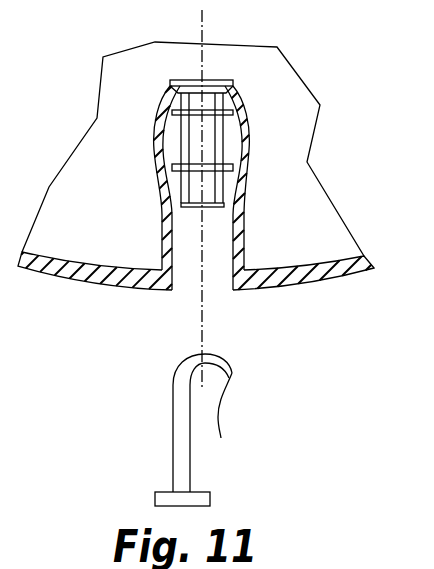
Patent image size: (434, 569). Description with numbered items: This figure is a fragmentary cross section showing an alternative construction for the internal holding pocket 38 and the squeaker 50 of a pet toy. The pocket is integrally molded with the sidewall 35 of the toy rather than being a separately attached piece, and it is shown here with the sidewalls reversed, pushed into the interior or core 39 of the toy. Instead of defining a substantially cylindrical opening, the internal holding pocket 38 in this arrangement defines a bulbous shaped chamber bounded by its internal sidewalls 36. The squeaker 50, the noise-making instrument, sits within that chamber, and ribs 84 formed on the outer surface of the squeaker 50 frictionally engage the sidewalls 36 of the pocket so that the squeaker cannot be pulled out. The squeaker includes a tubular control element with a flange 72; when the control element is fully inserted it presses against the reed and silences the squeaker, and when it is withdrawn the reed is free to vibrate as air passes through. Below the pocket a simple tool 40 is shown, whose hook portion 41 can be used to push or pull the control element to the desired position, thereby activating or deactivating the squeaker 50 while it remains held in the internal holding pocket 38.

The sidewall 35 is at (90, 282).
The internal sidewalls 36 is at (155, 143).
The internal holding pocket 38 is at (185, 296).
The core 39 is at (103, 233).
The tool 40 is at (173, 455).
The hook portion 41 is at (221, 438).
The squeaker 50 is at (192, 138).
The flange 72 is at (216, 218).
The ribs 84 is at (173, 113).